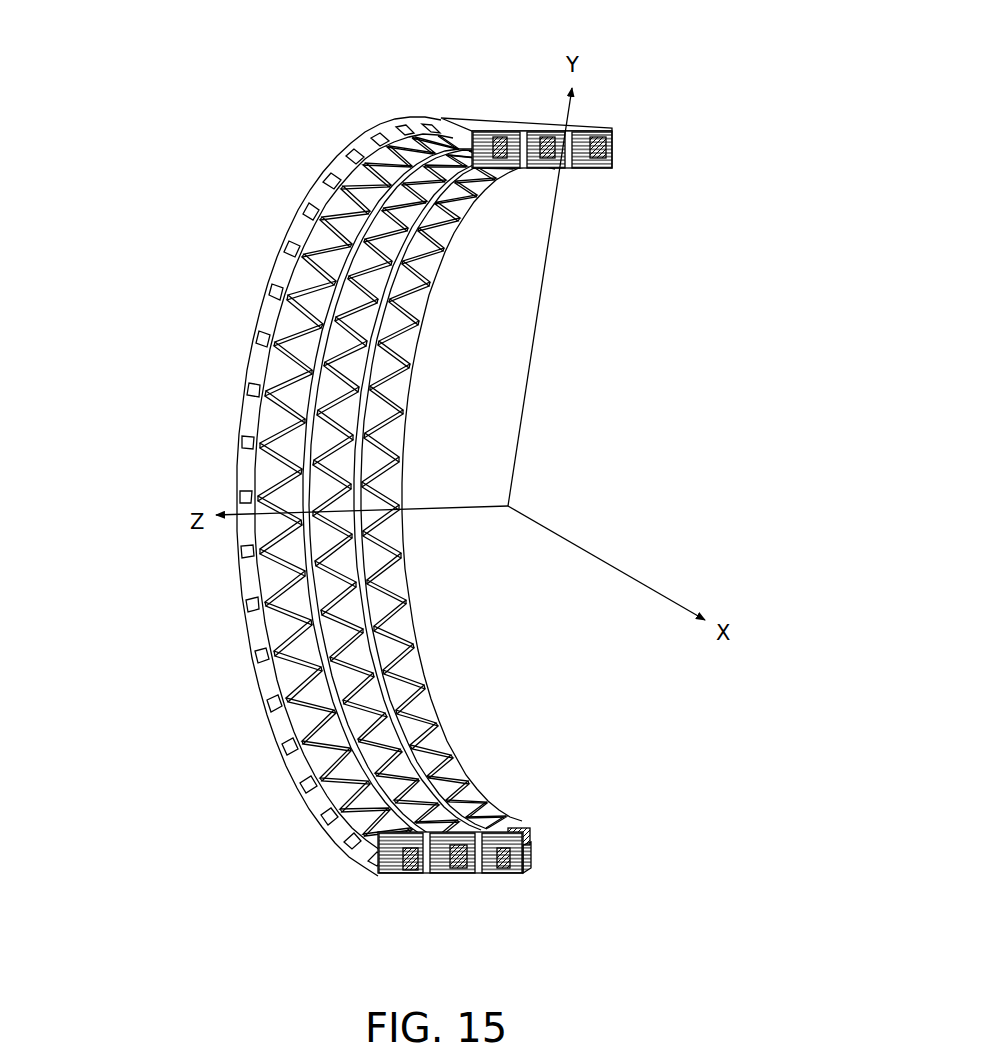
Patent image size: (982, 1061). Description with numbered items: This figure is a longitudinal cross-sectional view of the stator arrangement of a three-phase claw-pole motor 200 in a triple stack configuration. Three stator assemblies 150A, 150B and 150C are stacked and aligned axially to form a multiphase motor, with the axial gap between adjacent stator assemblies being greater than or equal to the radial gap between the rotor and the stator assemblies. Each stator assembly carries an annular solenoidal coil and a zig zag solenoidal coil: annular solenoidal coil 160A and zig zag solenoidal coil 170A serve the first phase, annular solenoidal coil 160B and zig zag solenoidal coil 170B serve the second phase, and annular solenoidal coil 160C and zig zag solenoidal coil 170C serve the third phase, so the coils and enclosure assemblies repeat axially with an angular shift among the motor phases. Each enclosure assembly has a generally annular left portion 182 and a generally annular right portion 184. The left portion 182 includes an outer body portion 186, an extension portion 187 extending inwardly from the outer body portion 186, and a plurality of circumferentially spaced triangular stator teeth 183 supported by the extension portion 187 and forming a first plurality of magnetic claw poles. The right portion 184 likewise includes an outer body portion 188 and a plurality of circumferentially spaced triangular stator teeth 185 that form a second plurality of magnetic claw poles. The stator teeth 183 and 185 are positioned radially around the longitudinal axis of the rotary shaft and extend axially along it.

The three-phase claw-pole motor 200 is at (360, 62).
The stator assembly 150A is at (460, 116).
The stator assembly 150B is at (516, 116).
The stator assembly 150C is at (588, 116).
The annular solenoidal coil 160A is at (521, 170).
The annular solenoidal coil 160B is at (566, 170).
The annular solenoidal coil 160C is at (614, 152).
The zig zag solenoidal coil 170A is at (250, 443).
The zig zag solenoidal coil 170B is at (302, 465).
The zig zag solenoidal coil 170C is at (406, 403).
The left portion 182 is at (250, 328).
The stator teeth 183 is at (270, 366).
The right portion 184 is at (529, 864).
The stator teeth 185 is at (316, 697).
The outer body portion 186 is at (342, 163).
The extension portion 187 is at (248, 578).
The outer body portion 188 is at (508, 876).